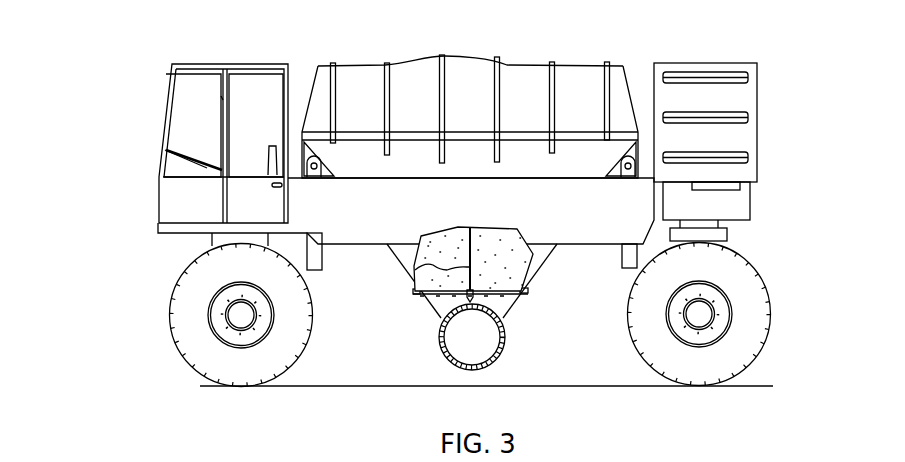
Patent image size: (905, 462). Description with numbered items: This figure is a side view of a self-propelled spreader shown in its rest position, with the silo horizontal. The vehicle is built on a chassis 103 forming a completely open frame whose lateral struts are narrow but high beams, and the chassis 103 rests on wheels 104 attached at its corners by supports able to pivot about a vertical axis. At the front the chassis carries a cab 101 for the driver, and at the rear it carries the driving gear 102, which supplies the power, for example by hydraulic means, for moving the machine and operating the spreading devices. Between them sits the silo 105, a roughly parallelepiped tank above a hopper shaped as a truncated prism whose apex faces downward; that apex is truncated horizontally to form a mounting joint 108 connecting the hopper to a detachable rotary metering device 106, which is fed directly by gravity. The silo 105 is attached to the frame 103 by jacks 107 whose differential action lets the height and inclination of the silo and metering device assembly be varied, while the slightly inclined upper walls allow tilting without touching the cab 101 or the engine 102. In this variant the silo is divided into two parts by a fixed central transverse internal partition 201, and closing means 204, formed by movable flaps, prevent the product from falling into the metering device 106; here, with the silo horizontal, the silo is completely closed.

The cab 101 is at (183, 127).
The driving gear 102 is at (682, 68).
The chassis 103 is at (578, 234).
The wheels 104 is at (740, 268).
The silo 105 is at (513, 72).
The rotary metering device 106 is at (488, 350).
The jacks 107 is at (625, 258).
The mounting joint 108 is at (525, 294).
The central transverse internal partition 201 is at (417, 270).
The closing means 204 is at (440, 297).